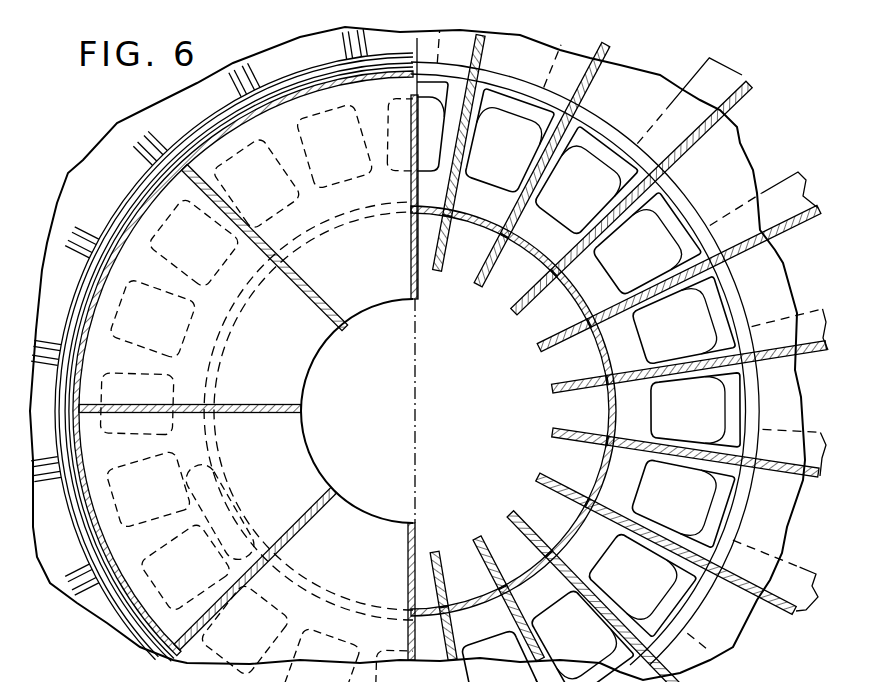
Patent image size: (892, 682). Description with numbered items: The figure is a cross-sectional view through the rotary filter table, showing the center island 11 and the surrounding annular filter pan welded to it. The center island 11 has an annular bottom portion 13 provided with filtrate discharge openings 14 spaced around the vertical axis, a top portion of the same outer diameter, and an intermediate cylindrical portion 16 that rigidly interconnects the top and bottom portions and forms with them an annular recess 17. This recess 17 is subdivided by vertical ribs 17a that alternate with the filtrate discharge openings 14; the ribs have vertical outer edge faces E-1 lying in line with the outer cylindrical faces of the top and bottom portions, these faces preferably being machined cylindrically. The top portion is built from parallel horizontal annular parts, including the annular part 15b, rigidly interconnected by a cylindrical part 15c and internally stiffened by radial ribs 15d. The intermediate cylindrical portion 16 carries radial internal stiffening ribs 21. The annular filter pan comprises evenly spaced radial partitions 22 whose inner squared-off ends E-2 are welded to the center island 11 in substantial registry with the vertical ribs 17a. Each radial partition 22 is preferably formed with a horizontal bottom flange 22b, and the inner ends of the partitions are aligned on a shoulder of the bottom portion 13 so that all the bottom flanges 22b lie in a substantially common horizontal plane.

The center island 11 is at (418, 354).
The annular bottom portion 13 is at (697, 593).
The filtrate discharge openings 14 is at (692, 420).
The horizontal annular part 15b is at (303, 443).
The cylindrical part 15c is at (93, 300).
The radial ribs 15d is at (300, 313).
The intermediate cylindrical portion 16 is at (603, 351).
The annular recess 17 is at (632, 344).
The vertical ribs 17a is at (655, 284).
The radial internal stiffening ribs 21 is at (520, 313).
The radial partitions 22 is at (608, 53).
The horizontal bottom flange 22b is at (770, 188).
The vertical outer edge faces E-1 is at (750, 357).
The inner squared-off ends E-2 is at (750, 373).